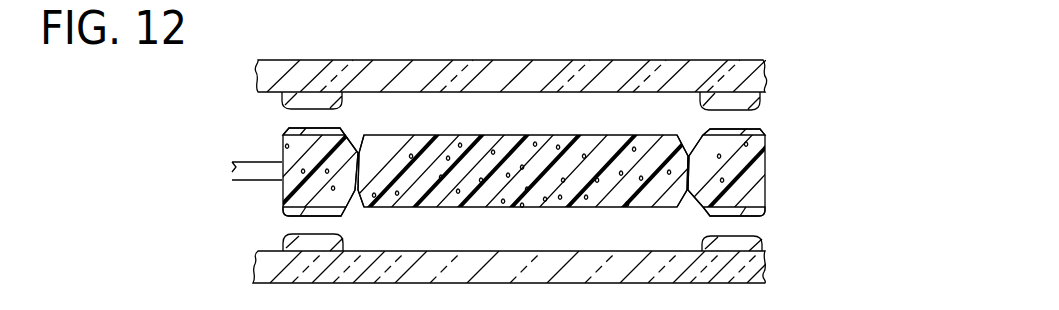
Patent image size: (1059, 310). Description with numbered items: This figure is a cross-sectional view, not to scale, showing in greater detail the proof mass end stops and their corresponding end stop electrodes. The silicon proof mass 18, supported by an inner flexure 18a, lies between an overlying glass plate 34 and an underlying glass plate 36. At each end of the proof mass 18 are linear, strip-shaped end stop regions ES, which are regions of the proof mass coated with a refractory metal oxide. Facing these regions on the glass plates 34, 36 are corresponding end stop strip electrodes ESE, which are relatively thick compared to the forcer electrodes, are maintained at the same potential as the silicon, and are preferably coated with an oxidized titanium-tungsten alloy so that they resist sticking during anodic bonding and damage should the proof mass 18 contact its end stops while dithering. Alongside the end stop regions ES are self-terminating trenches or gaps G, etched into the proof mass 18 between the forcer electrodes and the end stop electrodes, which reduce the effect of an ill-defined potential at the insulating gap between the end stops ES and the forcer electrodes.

The glass plate 34 is at (766, 72).
The glass plate 36 is at (766, 268).
The proof mass 18 is at (765, 170).
The inner flexure 18a is at (246, 170).
The end stop region ES is at (283, 130).
The end stop strip electrode ESE is at (282, 100).
The gap G is at (359, 150).